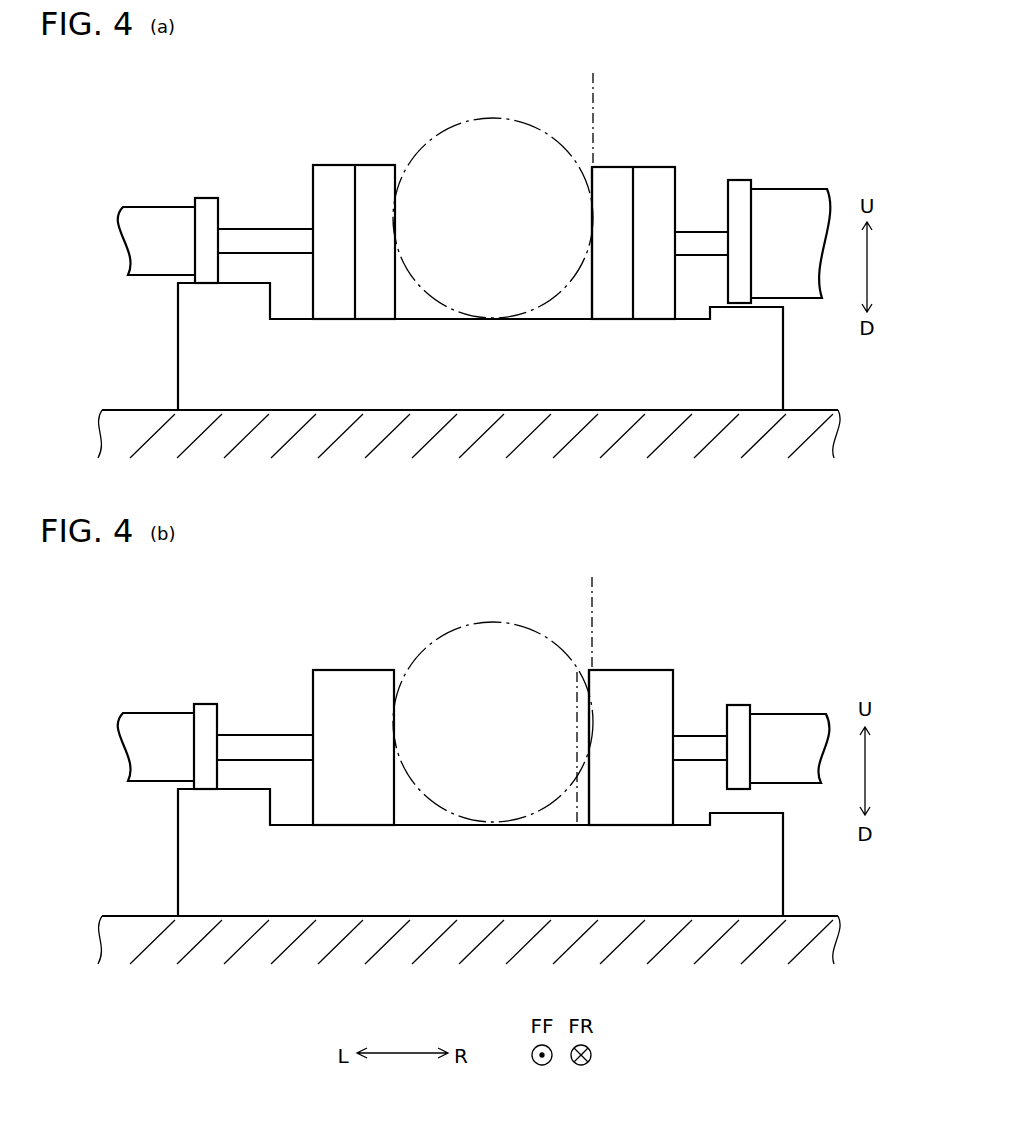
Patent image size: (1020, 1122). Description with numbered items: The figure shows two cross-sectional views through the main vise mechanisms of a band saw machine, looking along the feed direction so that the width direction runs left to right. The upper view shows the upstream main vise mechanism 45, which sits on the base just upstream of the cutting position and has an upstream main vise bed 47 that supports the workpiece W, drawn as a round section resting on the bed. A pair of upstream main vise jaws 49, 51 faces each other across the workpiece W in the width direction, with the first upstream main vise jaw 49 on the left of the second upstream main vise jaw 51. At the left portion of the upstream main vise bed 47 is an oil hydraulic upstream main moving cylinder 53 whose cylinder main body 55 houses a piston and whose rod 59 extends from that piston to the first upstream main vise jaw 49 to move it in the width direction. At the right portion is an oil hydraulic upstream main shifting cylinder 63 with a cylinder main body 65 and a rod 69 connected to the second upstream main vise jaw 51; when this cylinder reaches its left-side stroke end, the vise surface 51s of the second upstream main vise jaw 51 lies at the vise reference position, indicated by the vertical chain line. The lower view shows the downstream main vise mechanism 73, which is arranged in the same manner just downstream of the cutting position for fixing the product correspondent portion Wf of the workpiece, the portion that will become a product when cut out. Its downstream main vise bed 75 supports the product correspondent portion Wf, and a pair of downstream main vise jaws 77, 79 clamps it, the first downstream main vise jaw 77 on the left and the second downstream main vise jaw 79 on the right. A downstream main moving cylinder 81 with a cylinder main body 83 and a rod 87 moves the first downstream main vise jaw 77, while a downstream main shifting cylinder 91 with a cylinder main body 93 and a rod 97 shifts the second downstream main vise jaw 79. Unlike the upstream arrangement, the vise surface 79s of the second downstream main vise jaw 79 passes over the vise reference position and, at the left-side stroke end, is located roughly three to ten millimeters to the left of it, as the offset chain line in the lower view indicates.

The upstream main vise mechanism 45 is at (474, 207).
The upstream main vise bed 47 is at (178, 381).
The first upstream main vise jaw 49 is at (371, 170).
The second upstream main vise jaw 51 is at (609, 170).
The vise surface 51s is at (592, 287).
The upstream main moving cylinder 53 is at (168, 235).
The cylinder main body 55 is at (145, 280).
The rod 59 is at (266, 235).
The upstream main shifting cylinder 63 is at (779, 236).
The cylinder main body 65 is at (807, 303).
The rod 69 is at (696, 240).
The workpiece W is at (492, 117).
The downstream main vise mechanism 73 is at (474, 704).
The downstream main vise bed 75 is at (178, 886).
The first downstream main vise jaw 77 is at (369, 675).
The second downstream main vise jaw 79 is at (633, 675).
The vise surface 79s is at (589, 790).
The downstream main moving cylinder 81 is at (167, 740).
The cylinder main body 83 is at (145, 785).
The rod 87 is at (266, 740).
The downstream main shifting cylinder 91 is at (778, 744).
The cylinder main body 93 is at (805, 789).
The rod 97 is at (696, 745).
The product correspondent portion Wf is at (492, 622).